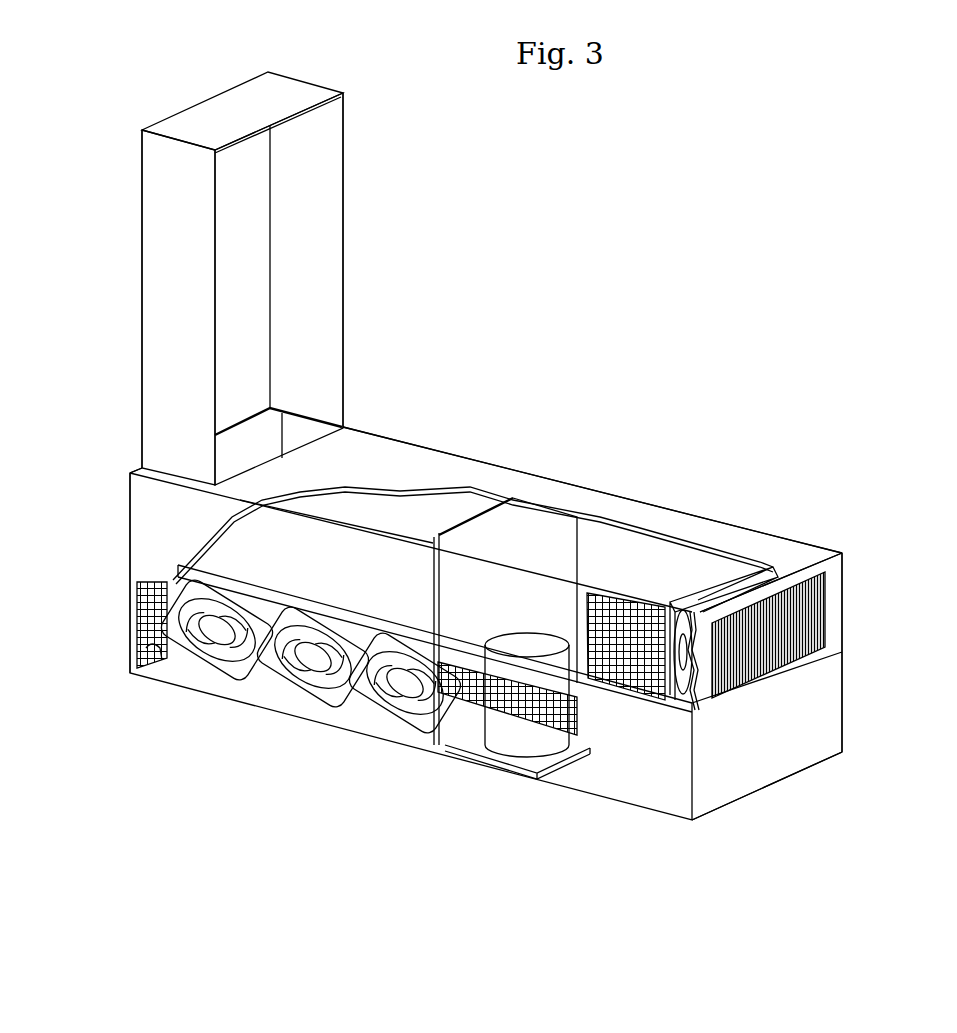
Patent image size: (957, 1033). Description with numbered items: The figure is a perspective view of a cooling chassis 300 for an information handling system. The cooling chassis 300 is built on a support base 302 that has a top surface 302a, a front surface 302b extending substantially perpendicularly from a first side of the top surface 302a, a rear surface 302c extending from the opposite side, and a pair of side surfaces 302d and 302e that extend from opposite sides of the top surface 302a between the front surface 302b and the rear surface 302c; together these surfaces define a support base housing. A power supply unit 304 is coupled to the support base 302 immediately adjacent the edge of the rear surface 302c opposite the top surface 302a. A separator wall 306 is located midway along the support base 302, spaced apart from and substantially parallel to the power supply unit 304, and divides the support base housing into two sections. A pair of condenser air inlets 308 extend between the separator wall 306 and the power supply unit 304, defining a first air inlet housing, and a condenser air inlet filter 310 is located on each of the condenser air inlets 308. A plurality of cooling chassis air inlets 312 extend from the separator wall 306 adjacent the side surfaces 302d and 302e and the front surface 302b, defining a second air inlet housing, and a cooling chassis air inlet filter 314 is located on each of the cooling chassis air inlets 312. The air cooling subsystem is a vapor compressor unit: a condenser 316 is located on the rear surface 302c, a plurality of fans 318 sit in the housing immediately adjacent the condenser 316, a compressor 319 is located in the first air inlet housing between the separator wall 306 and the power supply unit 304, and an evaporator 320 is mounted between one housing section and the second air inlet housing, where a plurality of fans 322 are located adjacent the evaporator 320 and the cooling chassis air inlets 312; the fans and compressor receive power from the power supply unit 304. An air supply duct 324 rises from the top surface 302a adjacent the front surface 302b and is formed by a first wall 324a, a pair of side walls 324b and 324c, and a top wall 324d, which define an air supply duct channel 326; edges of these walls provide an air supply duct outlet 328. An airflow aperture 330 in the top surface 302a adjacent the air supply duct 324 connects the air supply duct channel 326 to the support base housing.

The cooling chassis 300 is at (673, 150).
The support base 302 is at (700, 505).
The top surface 302a is at (612, 497).
The front surface 302b is at (130, 505).
The rear surface 302c is at (838, 635).
The side surface 302d is at (137, 534).
The side surface 302e is at (498, 464).
The power supply unit 304 is at (750, 750).
The separator wall 306 is at (462, 718).
The condenser air inlets 308 is at (612, 605).
The condenser air inlet filter 310 is at (588, 744).
The cooling chassis air inlets 312 is at (128, 617).
The cooling chassis air inlet filter 314 is at (146, 650).
The condenser 316 is at (830, 602).
The fans 318 is at (766, 570).
The compressor 319 is at (515, 633).
The evaporator 320 is at (368, 582).
The fans 322 is at (193, 652).
The air supply duct 324 is at (207, 100).
The first wall 324a is at (142, 224).
The side wall 324b is at (152, 300).
The side wall 324c is at (325, 203).
The top wall 324d is at (300, 90).
The air supply duct channel 326 is at (318, 320).
The air supply duct outlet 328 is at (343, 110).
The airflow aperture 330 is at (300, 436).